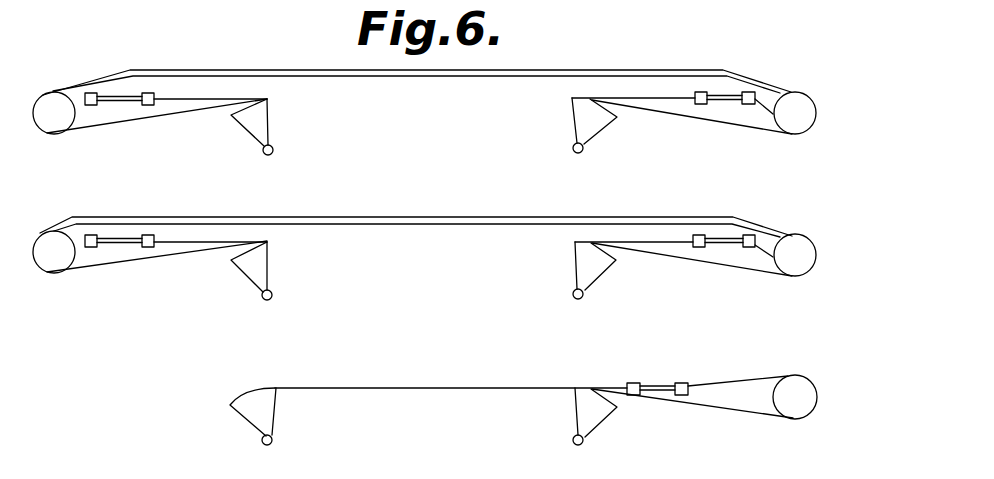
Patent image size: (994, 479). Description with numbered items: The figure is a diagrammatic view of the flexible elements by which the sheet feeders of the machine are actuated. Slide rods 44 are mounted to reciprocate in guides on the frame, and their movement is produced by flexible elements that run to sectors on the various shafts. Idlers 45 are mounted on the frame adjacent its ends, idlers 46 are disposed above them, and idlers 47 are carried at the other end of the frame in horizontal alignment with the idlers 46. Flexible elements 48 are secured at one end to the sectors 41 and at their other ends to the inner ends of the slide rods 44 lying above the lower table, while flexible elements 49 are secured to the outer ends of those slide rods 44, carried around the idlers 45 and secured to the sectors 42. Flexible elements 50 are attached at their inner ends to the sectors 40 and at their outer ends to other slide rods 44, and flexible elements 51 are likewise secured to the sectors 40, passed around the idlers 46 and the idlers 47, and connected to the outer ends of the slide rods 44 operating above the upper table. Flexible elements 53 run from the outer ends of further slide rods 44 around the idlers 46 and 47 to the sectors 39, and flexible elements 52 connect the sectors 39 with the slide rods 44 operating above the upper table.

The sector 39 is at (256, 121).
The sector 40 is at (597, 130).
The sector 41 is at (246, 408).
The sector 42 is at (597, 415).
The slide rod 44 is at (111, 97).
The idler 45 is at (792, 385).
The idler 46 is at (795, 108).
The idler 47 is at (47, 101).
The flexible element 48 is at (313, 390).
The flexible element 49 is at (722, 408).
The flexible element 50 is at (670, 99).
The flexible element 51 is at (163, 76).
The flexible element 52 is at (211, 245).
The flexible element 53 is at (161, 116).